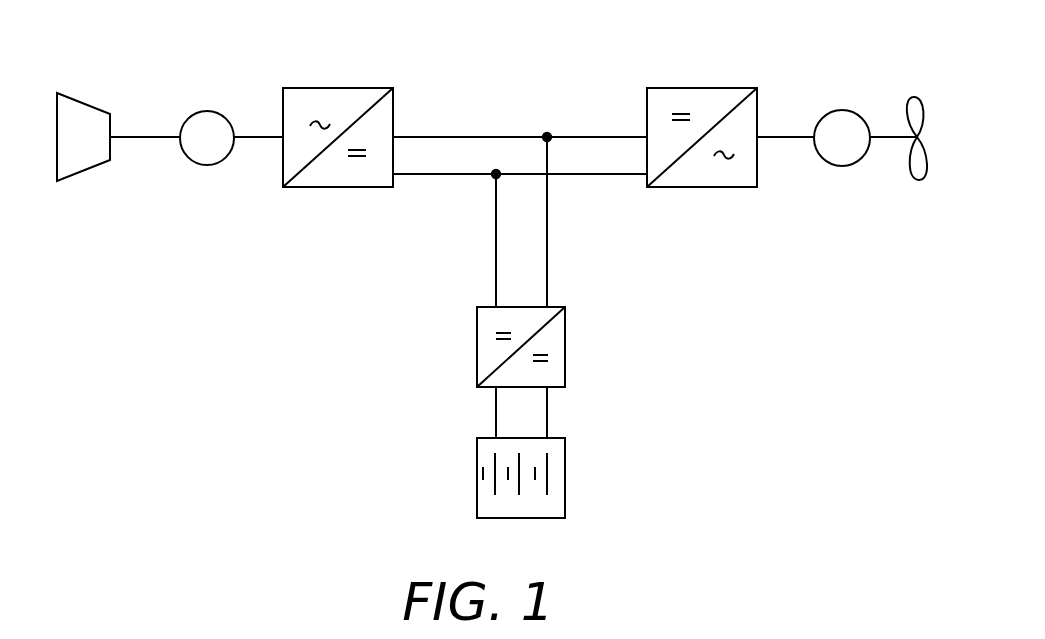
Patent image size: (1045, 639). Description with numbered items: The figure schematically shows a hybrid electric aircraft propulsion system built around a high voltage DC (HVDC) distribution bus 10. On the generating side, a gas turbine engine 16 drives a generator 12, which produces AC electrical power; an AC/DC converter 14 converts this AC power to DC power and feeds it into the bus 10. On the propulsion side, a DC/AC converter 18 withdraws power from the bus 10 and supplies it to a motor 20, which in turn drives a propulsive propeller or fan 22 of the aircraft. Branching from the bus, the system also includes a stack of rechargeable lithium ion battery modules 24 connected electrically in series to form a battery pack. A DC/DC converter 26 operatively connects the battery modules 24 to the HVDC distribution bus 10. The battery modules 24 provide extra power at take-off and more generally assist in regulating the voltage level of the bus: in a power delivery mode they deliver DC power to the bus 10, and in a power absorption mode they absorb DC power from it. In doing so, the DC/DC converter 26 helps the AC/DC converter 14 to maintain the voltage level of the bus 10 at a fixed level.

The high voltage DC distribution bus 10 is at (460, 137).
The generator 12 is at (192, 165).
The AC/DC converter 14 is at (342, 88).
The gas turbine engine 16 is at (55, 165).
The DC/AC converter 18 is at (702, 88).
The motor 20 is at (841, 110).
The propulsive propeller or fan 22 is at (915, 97).
The rechargeable lithium ion battery modules 24 is at (477, 465).
The DC/DC converter 26 is at (477, 340).